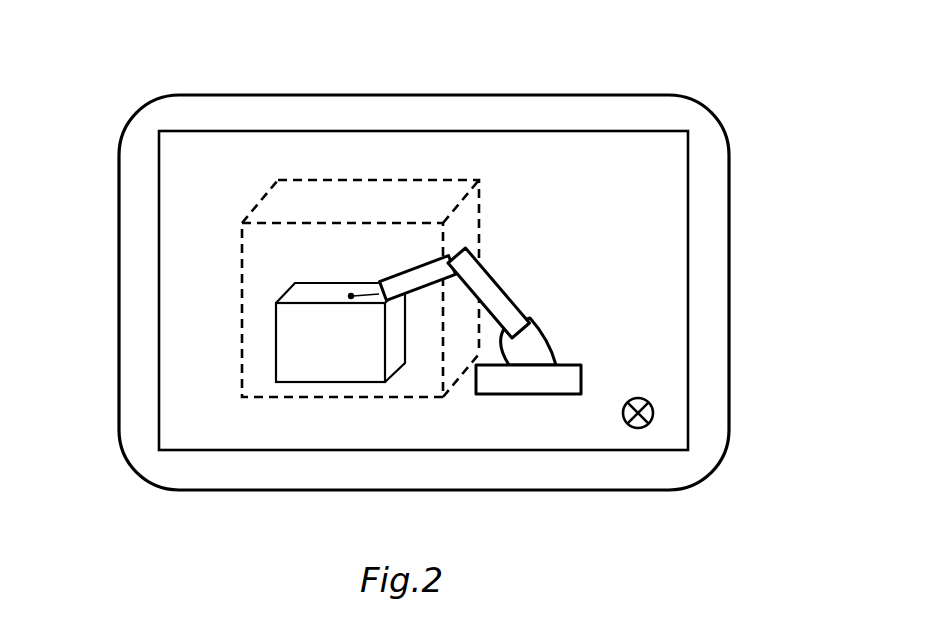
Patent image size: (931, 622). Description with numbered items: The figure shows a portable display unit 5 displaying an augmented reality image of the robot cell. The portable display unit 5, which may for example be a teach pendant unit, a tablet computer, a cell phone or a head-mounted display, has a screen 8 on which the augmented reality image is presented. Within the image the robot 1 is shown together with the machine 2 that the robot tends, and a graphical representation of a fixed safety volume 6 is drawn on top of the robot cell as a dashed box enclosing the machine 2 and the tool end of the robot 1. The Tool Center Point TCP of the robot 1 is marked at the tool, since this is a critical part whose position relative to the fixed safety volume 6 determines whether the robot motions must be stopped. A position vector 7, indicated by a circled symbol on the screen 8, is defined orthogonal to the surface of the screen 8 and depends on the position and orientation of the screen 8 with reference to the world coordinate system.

The robot 1 is at (503, 298).
The machine 2 is at (295, 335).
The portable display unit 5 is at (738, 235).
The fixed safety volume 6 is at (282, 206).
The position vector 7 is at (654, 413).
The screen 8 is at (653, 178).
The Tool Center Point TCP is at (351, 293).